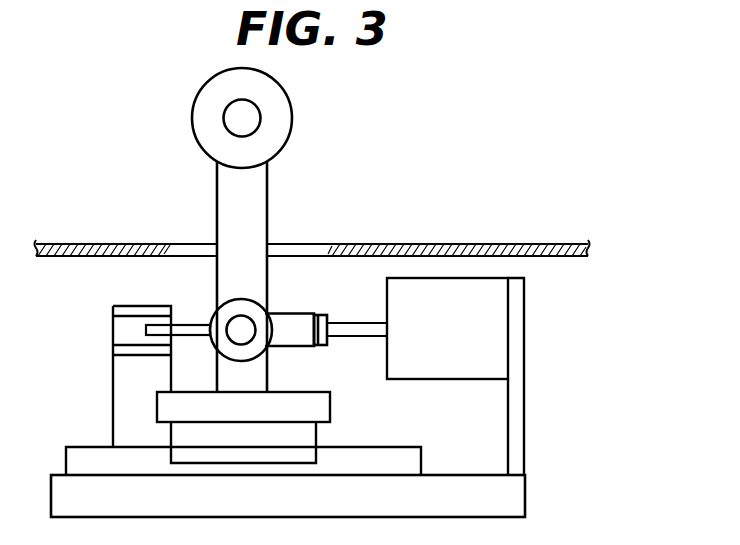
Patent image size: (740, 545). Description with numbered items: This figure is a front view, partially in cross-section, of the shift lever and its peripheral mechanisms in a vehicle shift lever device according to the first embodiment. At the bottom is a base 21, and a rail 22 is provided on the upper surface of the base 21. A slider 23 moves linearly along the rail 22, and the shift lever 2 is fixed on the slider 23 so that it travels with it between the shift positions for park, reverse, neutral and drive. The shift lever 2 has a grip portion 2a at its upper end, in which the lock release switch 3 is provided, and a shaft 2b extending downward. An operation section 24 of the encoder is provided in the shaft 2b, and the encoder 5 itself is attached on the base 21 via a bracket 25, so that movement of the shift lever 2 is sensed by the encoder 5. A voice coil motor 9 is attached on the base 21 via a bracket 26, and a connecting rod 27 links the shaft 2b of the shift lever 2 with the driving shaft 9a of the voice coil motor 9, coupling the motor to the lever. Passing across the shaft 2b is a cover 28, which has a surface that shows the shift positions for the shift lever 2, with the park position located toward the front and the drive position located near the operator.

The shift lever 2 is at (269, 184).
The grip portion 2a is at (290, 105).
The shaft 2b is at (216, 207).
The lock release switch 3 is at (232, 118).
The encoder 5 is at (112, 341).
The voice coil motor 9 is at (497, 350).
The driving shaft 9a is at (358, 323).
The base 21 is at (525, 496).
The rail 22 is at (421, 452).
The slider 23 is at (187, 440).
The operation section 24 is at (195, 323).
The bracket 25 is at (112, 384).
The bracket 26 is at (525, 384).
The connecting rod 27 is at (305, 313).
The cover 28 is at (533, 244).